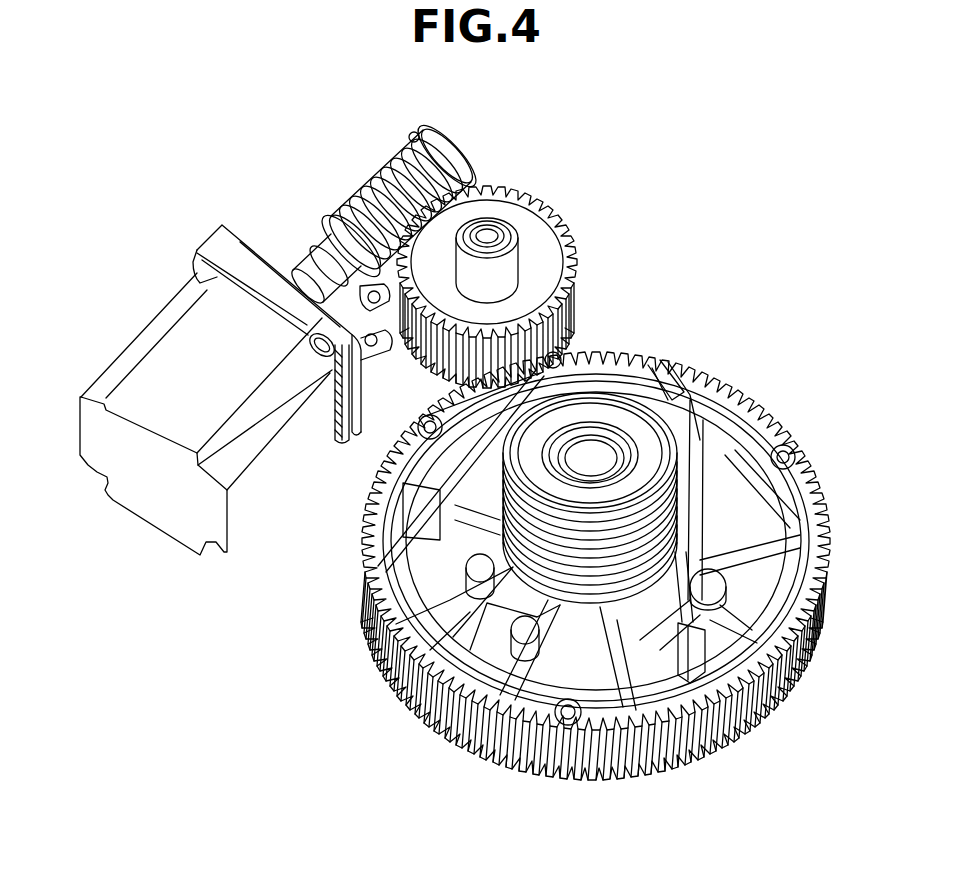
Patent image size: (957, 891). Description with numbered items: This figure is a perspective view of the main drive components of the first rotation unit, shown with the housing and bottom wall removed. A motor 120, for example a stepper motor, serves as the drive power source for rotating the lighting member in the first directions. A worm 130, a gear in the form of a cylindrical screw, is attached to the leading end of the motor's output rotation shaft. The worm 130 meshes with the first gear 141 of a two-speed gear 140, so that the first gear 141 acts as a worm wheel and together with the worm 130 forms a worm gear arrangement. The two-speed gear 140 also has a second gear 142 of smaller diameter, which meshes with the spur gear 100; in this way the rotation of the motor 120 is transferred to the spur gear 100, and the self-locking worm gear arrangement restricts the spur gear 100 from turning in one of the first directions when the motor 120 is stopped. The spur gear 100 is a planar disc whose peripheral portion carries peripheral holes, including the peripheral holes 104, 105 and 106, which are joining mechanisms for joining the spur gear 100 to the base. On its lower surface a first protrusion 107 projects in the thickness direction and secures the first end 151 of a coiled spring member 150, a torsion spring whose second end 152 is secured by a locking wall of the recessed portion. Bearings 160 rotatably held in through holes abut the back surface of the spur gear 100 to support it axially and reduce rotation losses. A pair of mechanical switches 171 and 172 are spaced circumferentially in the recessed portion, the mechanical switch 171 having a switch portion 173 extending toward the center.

The spur gear 100 is at (648, 772).
The peripheral hole 104 is at (396, 668).
The peripheral hole 105 is at (448, 718).
The peripheral hole 106 is at (520, 760).
The first protrusion 107 is at (726, 582).
The motor 120 is at (183, 403).
The worm 130 is at (387, 165).
The two-speed gear 140 is at (545, 250).
The first gear 141 is at (523, 193).
The second gear 142 is at (420, 400).
The spring member 150 is at (690, 378).
The first end 151 is at (741, 728).
The second end 152 is at (380, 560).
The bearing 160 is at (553, 353).
The mechanical switch 171 is at (373, 533).
The mechanical switch 172 is at (670, 355).
The switch portion 173 is at (396, 624).